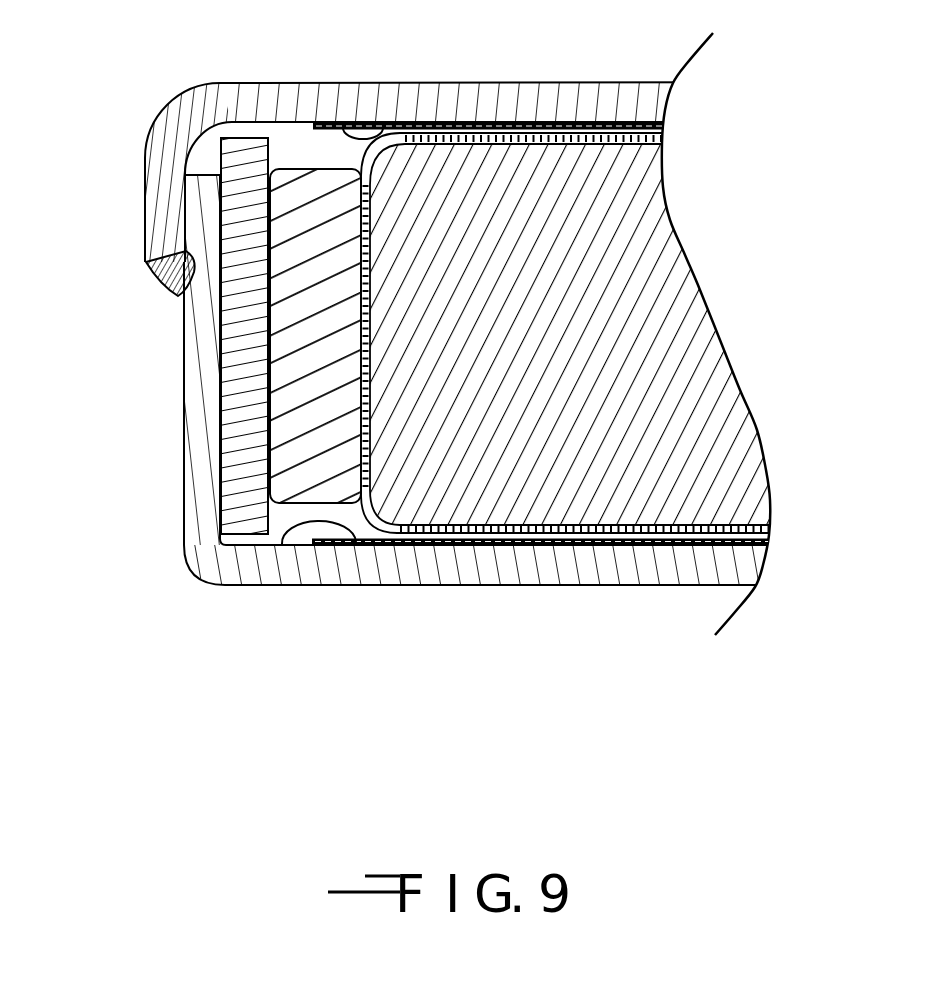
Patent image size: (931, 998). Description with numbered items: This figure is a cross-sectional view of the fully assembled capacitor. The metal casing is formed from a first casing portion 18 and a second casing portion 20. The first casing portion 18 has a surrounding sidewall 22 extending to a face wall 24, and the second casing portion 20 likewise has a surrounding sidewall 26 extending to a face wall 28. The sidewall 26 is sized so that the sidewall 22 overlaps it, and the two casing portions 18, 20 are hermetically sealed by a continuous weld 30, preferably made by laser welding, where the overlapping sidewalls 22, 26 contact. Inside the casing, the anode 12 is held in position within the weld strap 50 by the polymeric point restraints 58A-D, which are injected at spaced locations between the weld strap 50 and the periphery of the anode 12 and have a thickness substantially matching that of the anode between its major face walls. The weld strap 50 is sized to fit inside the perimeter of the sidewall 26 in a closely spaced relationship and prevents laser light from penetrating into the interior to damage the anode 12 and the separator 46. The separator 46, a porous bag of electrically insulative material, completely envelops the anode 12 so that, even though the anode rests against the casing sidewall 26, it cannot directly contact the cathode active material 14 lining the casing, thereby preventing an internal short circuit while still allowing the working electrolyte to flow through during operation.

The anode 12 is at (645, 343).
The cathode active material 14 is at (388, 117).
The first casing portion 18 is at (433, 136).
The second casing portion 20 is at (457, 424).
The sidewall 22 is at (152, 199).
The face wall 24 is at (497, 102).
The sidewall 26 is at (195, 438).
The face wall 28 is at (512, 567).
The weld 30 is at (163, 276).
The separator 46 is at (590, 140).
The weld strap 50 is at (240, 476).
The polymeric point restraints 58A-D is at (347, 398).